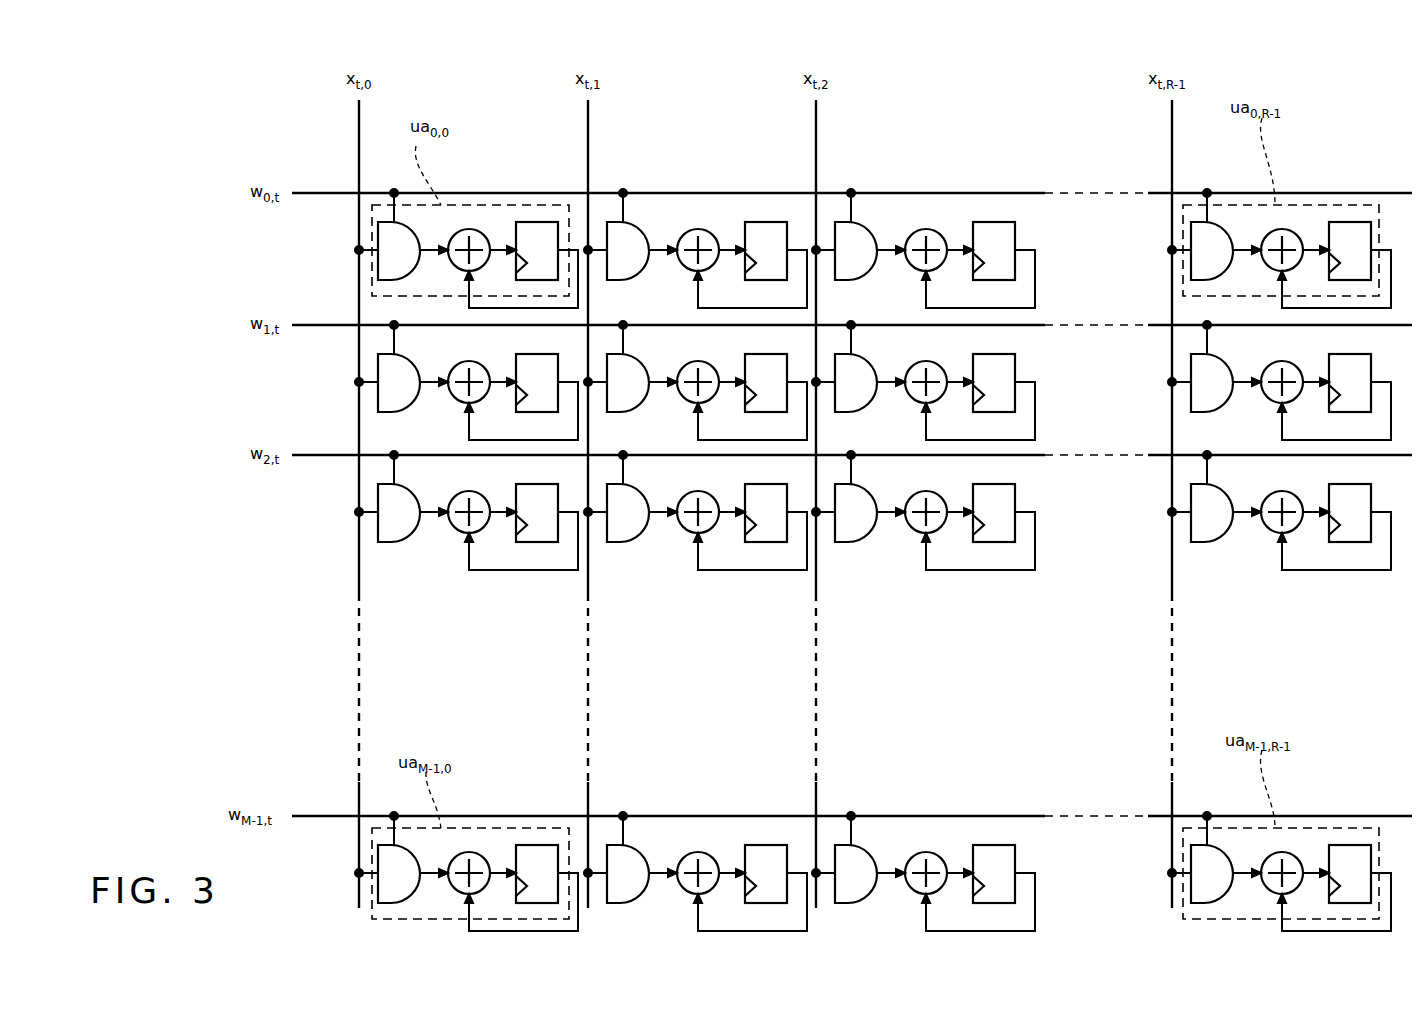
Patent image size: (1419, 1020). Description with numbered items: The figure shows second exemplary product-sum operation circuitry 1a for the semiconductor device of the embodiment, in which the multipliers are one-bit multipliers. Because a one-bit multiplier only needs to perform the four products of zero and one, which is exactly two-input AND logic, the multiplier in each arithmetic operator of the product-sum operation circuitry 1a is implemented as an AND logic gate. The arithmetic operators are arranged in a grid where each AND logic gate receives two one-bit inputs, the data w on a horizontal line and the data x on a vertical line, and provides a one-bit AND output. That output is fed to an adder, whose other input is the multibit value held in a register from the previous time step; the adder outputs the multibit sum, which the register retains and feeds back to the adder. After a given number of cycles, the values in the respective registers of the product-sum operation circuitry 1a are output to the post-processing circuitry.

The second exemplary product-sum operation circuitry 1a is at (972, 72).